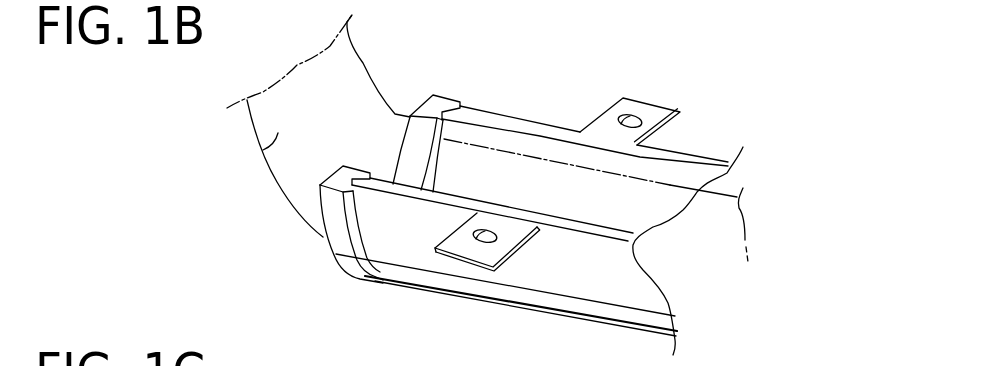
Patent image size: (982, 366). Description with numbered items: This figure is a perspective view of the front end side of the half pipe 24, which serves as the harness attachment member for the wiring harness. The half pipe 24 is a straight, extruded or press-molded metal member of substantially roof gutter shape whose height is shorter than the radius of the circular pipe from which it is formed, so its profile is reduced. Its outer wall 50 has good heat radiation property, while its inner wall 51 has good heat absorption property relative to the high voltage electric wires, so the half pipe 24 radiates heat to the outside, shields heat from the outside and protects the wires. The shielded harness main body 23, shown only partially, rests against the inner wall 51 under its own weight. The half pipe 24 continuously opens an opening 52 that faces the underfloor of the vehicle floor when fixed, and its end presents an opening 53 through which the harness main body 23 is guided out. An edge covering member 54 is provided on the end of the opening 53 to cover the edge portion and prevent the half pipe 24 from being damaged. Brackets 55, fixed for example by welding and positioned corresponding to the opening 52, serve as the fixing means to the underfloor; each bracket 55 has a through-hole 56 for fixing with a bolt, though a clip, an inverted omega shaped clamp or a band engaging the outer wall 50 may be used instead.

The harness main body 23 is at (263, 150).
The half pipe 24 is at (588, 293).
The outer wall 50 is at (603, 257).
The inner wall 51 is at (657, 168).
The opening 52 is at (507, 142).
The opening 53 is at (413, 172).
The edge covering member 54 is at (337, 264).
The bracket 55 is at (660, 110).
The through-hole 56 is at (628, 115).